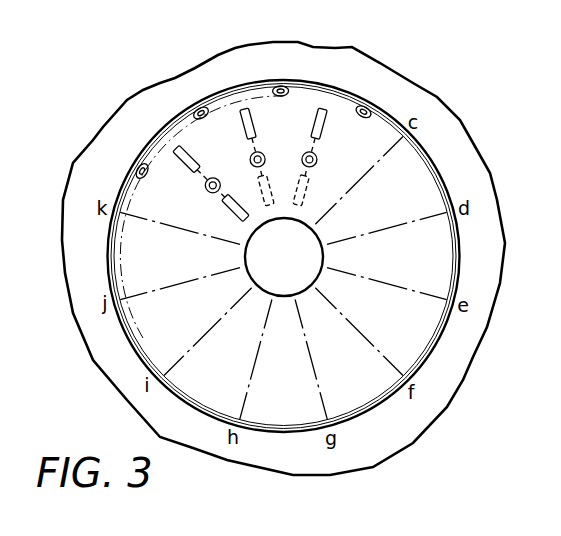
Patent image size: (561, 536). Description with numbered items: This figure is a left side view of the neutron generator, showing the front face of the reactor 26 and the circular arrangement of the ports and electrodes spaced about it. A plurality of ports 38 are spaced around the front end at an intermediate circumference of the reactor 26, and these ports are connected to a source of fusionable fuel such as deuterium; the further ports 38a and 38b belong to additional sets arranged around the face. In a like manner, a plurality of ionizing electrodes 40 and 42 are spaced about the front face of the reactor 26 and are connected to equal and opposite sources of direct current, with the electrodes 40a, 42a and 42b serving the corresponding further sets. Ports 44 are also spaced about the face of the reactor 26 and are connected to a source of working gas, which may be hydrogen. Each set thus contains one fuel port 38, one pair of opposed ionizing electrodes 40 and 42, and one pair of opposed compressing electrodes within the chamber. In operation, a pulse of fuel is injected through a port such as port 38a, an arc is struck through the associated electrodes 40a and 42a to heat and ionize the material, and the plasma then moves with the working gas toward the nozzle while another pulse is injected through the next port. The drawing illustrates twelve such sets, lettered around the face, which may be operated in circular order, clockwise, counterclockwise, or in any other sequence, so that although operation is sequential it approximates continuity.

The reactor 26 is at (503, 201).
The port 38 is at (228, 158).
The port 38a is at (257, 151).
The port 38b is at (316, 161).
The ionizing electrode 40 is at (228, 212).
The ionizing electrode 40a is at (269, 173).
The ionizing electrode 42 is at (193, 178).
The ionizing electrode 42a is at (241, 108).
The ionizing electrode 42b is at (324, 130).
The port 44 is at (364, 105).